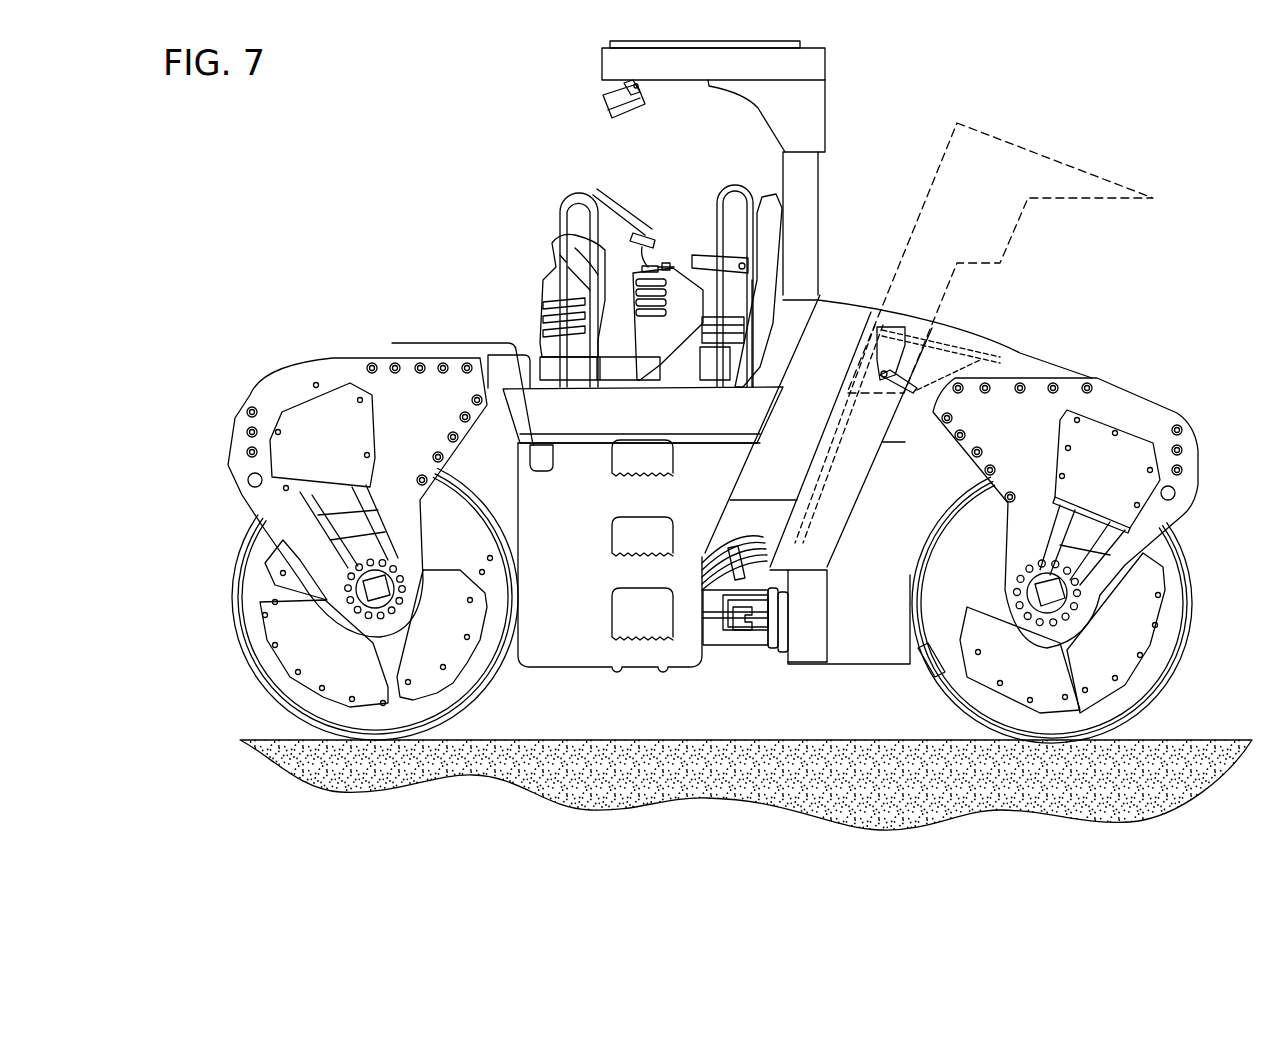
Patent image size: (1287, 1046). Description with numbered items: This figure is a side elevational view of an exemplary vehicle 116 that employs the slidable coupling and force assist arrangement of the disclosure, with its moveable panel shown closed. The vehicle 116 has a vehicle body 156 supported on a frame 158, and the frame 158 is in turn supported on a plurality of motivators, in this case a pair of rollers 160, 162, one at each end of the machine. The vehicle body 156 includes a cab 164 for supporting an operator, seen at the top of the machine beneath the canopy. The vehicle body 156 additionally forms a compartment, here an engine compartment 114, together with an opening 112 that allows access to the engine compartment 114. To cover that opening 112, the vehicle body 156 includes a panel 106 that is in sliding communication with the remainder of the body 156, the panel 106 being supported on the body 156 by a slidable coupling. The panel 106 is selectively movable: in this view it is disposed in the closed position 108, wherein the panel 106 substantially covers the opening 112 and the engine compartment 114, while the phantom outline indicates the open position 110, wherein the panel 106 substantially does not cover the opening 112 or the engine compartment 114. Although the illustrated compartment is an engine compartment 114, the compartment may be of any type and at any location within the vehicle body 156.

The vehicle 116 is at (636, 43).
The cab 164 is at (622, 150).
The panel 106 is at (887, 315).
The open position 110 is at (1017, 145).
The opening 112 is at (1008, 405).
The closed position 108 is at (903, 437).
The roller 160 is at (233, 600).
The vehicle body 156 is at (541, 668).
The frame 158 is at (686, 668).
The engine compartment 114 is at (883, 587).
The roller 162 is at (1147, 697).